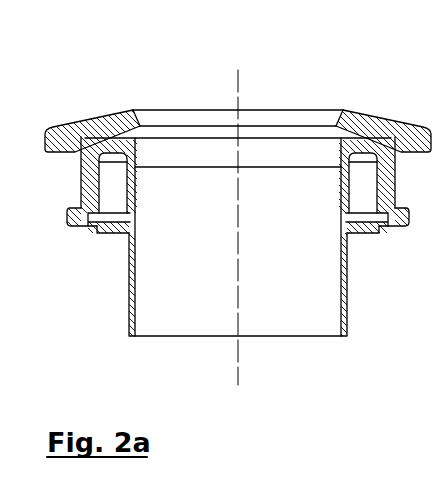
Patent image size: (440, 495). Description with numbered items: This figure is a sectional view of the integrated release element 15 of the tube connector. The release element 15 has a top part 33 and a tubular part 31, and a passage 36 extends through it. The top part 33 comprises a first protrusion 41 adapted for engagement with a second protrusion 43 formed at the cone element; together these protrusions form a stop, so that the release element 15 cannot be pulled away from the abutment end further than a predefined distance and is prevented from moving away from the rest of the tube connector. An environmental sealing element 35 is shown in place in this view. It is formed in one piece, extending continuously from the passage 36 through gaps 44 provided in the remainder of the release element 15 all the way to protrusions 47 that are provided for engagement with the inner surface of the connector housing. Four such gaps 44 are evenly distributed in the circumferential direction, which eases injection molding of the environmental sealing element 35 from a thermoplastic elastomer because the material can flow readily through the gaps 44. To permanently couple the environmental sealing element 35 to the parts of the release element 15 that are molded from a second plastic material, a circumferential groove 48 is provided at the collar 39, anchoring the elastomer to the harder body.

The release element 15 is at (213, 88).
The tubular part 31 is at (128, 325).
The top part 33 is at (63, 147).
The environmental sealing element 35 is at (367, 116).
The passage 36 is at (285, 262).
The collar 39 is at (97, 183).
The first protrusion 41 is at (358, 222).
The second protrusion 43 is at (393, 248).
The gaps 44 is at (80, 166).
The protrusions 47 is at (70, 228).
The circumferential groove 48 is at (110, 218).